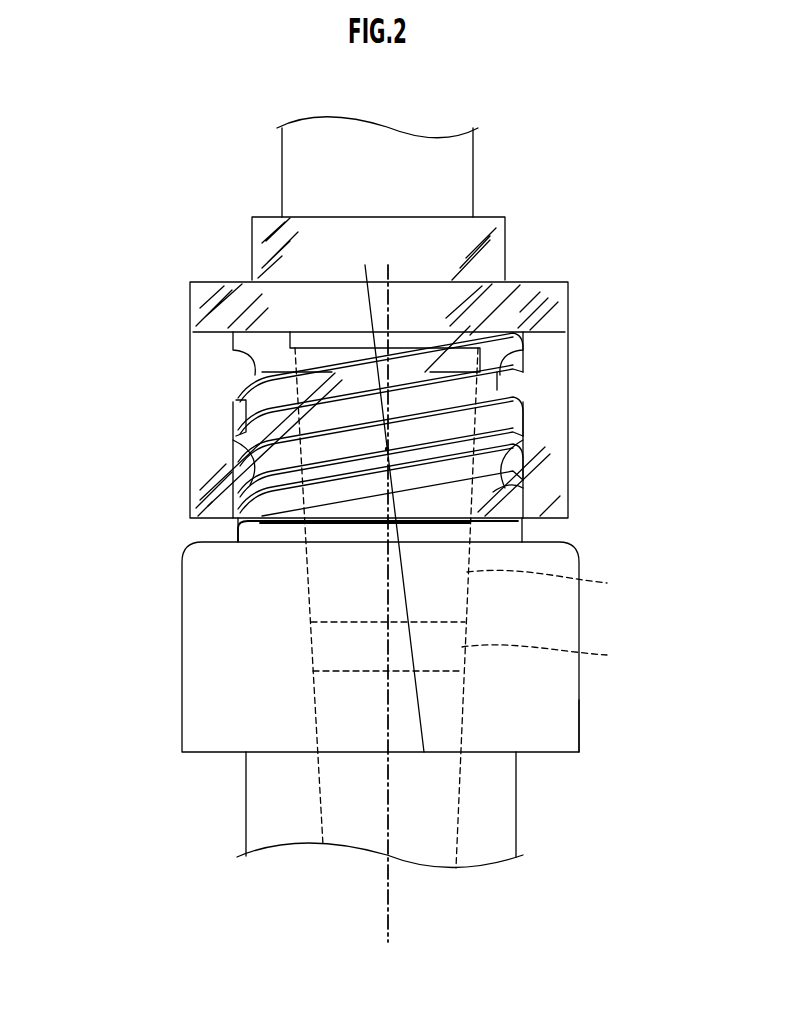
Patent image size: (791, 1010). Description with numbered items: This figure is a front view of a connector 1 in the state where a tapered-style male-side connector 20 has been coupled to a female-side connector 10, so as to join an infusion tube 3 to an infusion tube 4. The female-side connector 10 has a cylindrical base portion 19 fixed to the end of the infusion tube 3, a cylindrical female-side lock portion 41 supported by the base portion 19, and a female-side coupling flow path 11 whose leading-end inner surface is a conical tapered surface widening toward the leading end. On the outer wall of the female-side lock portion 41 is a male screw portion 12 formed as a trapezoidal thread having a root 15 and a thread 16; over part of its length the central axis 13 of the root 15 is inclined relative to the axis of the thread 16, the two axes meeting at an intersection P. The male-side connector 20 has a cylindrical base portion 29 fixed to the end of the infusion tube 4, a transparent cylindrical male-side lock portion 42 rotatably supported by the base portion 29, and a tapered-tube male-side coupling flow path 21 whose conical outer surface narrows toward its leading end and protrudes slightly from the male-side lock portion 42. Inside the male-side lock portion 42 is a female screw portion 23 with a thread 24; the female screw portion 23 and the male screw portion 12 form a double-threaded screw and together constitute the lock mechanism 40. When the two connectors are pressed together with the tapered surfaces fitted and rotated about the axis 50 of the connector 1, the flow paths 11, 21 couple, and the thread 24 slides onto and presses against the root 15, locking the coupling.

The connector 1 is at (62, 479).
The infusion tube 3 is at (516, 804).
The infusion tube 4 is at (473, 150).
The female-side connector 10 is at (668, 588).
The female-side coupling flow path 11 is at (472, 646).
The male screw portion 12 is at (265, 462).
The central axis of the root 13 is at (402, 571).
The root 15 is at (505, 458).
The thread 16 is at (513, 427).
The base portion 19 is at (579, 727).
The male-side connector 20 is at (579, 195).
The male-side coupling flow path 21 is at (550, 583).
The female screw portion 23 is at (243, 413).
The thread 24 is at (512, 390).
The base portion 29 is at (505, 244).
The lock mechanism 40 is at (668, 412).
The female-side lock portion 41 is at (226, 531).
The male-side lock portion 42 is at (580, 297).
The axis 50 is at (421, 603).
The intersection P is at (387, 449).